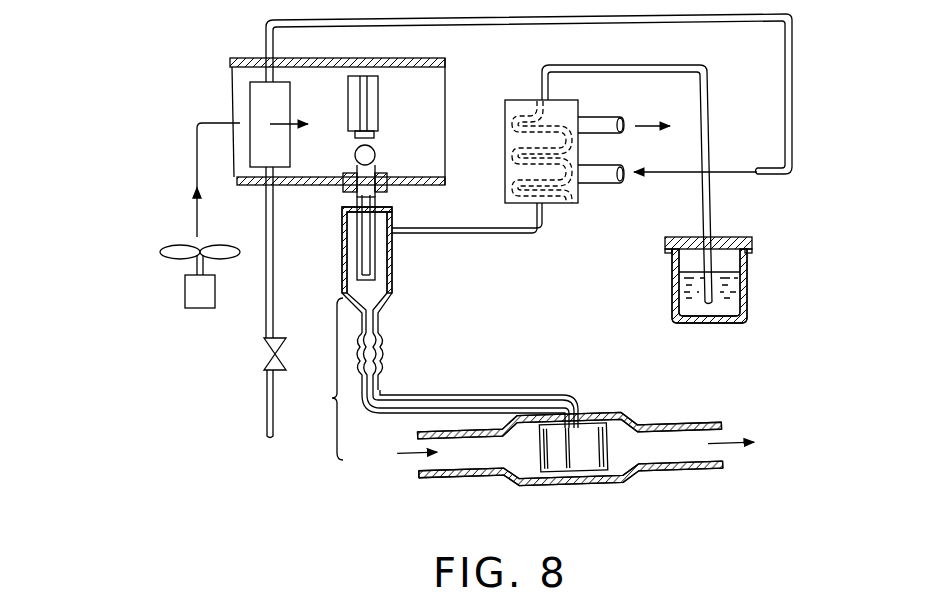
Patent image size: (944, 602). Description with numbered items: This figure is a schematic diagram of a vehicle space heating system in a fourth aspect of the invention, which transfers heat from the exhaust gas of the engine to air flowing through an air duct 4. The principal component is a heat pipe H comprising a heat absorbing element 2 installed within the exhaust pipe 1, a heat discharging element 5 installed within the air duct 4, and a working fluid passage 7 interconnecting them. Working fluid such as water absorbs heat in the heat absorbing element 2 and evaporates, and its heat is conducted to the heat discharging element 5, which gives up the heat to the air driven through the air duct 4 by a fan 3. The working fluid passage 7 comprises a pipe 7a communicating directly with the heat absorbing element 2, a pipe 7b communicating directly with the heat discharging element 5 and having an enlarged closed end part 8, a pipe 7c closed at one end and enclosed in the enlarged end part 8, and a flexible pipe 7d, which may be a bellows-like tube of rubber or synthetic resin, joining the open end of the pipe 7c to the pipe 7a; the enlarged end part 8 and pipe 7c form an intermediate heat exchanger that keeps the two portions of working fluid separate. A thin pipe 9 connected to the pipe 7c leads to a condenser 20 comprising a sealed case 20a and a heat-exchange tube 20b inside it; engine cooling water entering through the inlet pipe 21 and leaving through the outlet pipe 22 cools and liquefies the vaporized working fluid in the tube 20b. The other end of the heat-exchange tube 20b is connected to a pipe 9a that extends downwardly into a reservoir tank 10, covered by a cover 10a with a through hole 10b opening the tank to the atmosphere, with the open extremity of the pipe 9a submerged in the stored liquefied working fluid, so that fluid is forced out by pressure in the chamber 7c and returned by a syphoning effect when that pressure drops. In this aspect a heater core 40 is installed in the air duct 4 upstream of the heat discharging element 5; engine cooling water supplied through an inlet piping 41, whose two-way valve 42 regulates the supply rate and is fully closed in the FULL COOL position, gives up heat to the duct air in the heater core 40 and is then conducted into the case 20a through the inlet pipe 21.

The exhaust pipe 1 is at (576, 470).
The heat absorbing element 2 is at (582, 471).
The fan 3 is at (175, 250).
The air duct 4 is at (430, 57).
The heat discharging element 5 is at (380, 113).
The working fluid passage 7 is at (392, 309).
The pipe 7a is at (506, 393).
The pipe 7b is at (357, 192).
The pipe 7c is at (392, 268).
The flexible pipe 7d is at (383, 357).
The enlarged closed end part 8 is at (357, 250).
The thin pipe 9 is at (478, 235).
The pipe 9a is at (708, 118).
The reservoir tank 10 is at (672, 295).
The cover 10a is at (676, 240).
The through hole 10b is at (730, 237).
The condenser 20 is at (515, 124).
The case 20a is at (505, 130).
The heat-exchange tube 20b is at (520, 175).
The inlet pipe 21 is at (610, 184).
The outlet pipe 22 is at (612, 117).
The heater core 40 is at (250, 98).
The inlet piping 41 is at (267, 288).
The two-way valve 42 is at (267, 360).
The heat pipe H is at (326, 417).